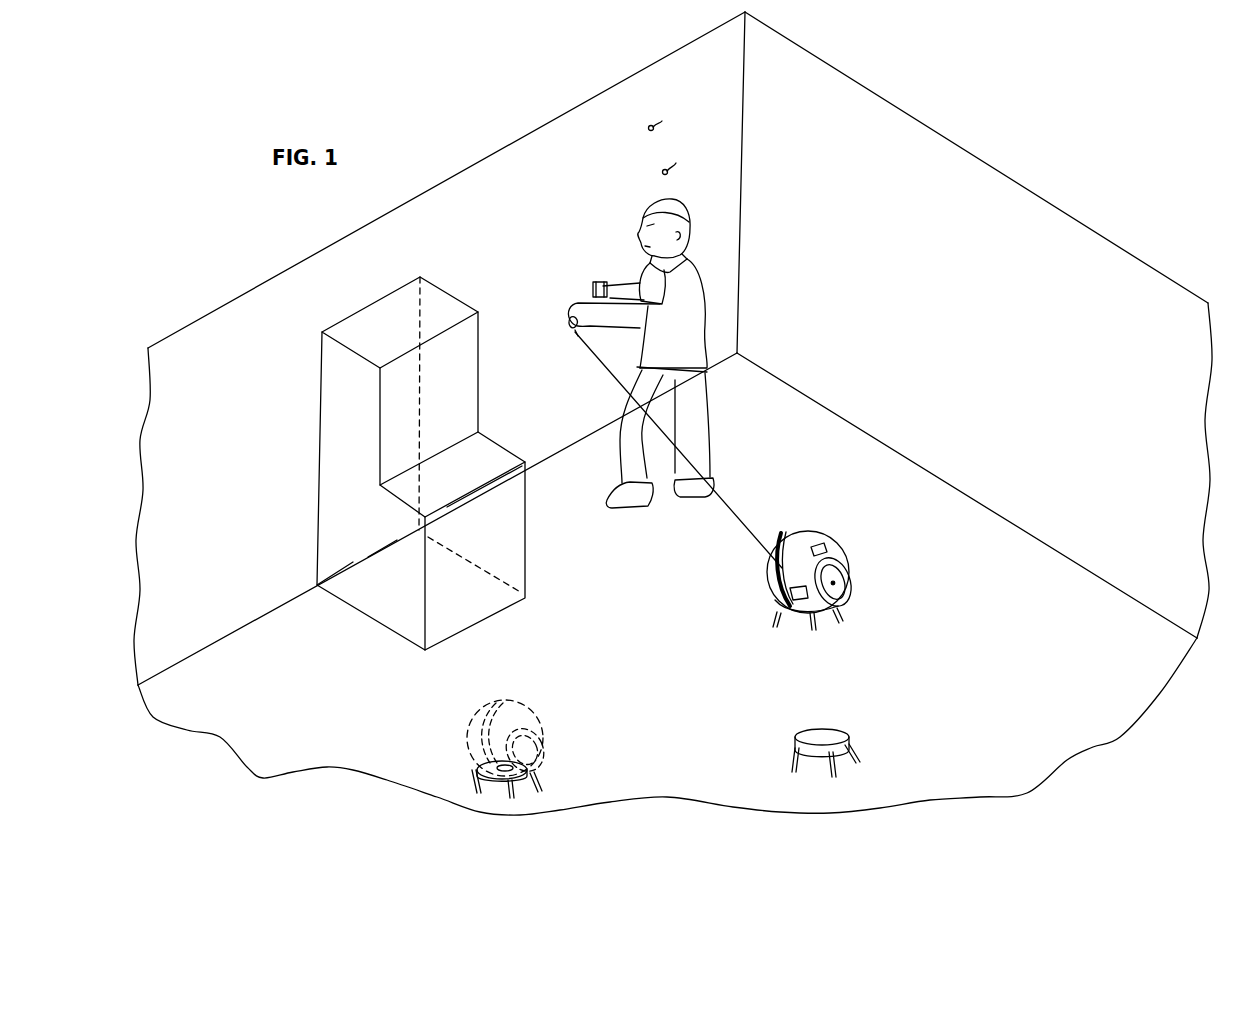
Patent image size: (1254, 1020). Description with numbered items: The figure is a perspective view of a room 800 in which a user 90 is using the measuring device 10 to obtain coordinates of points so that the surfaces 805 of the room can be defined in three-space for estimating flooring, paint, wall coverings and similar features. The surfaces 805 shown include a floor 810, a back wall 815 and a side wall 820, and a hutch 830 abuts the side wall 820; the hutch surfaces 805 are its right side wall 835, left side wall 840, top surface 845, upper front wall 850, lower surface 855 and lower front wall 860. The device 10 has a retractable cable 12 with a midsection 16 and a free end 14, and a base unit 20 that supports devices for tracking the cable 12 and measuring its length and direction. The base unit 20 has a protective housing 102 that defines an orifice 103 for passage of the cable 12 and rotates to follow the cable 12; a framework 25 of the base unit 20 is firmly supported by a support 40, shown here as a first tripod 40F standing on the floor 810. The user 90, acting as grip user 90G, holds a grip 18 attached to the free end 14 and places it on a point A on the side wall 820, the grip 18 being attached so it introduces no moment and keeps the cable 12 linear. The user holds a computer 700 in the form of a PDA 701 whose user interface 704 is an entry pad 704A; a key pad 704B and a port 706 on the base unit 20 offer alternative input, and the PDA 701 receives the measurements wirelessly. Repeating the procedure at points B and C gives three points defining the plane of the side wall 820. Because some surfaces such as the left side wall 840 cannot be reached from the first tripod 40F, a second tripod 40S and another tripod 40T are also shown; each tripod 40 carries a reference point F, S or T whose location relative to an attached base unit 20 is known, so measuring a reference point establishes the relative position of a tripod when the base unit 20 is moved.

The measuring device 10 is at (686, 648).
The retractable cable 12 is at (727, 495).
The free end 14 is at (572, 330).
The midsection 16 is at (742, 515).
The grip 18 is at (580, 330).
The base unit 20 is at (838, 603).
The framework 25 is at (770, 593).
The support 40 is at (803, 623).
The first tripod 40F is at (790, 627).
The second tripod 40S is at (540, 790).
The another tripod 40T is at (832, 774).
The user 90 is at (688, 207).
The grip user 90G is at (697, 277).
The housing 102 is at (837, 557).
The orifice 103 is at (800, 533).
The computer 700 is at (610, 283).
The personal digital assistant 701 is at (601, 282).
The user interface 704 is at (592, 290).
The entry pad 704A is at (576, 302).
The key pad 704B is at (820, 547).
The port 706 is at (835, 585).
The room 800 is at (693, 724).
The surfaces 805 is at (600, 100).
The floor 810 is at (1061, 700).
The back wall 815 is at (1128, 297).
The side wall 820 is at (547, 128).
The hutch 830 is at (296, 531).
The right side wall 835 is at (458, 303).
The left side wall 840 is at (333, 388).
The top surface 845 is at (380, 310).
The upper front wall 850 is at (377, 458).
The lower surface 855 is at (430, 498).
The lower front wall 860 is at (450, 592).
The point A is at (572, 325).
The point B is at (661, 122).
The point C is at (676, 162).
The reference point F is at (820, 622).
The reference point S is at (529, 749).
The reference point T is at (822, 747).